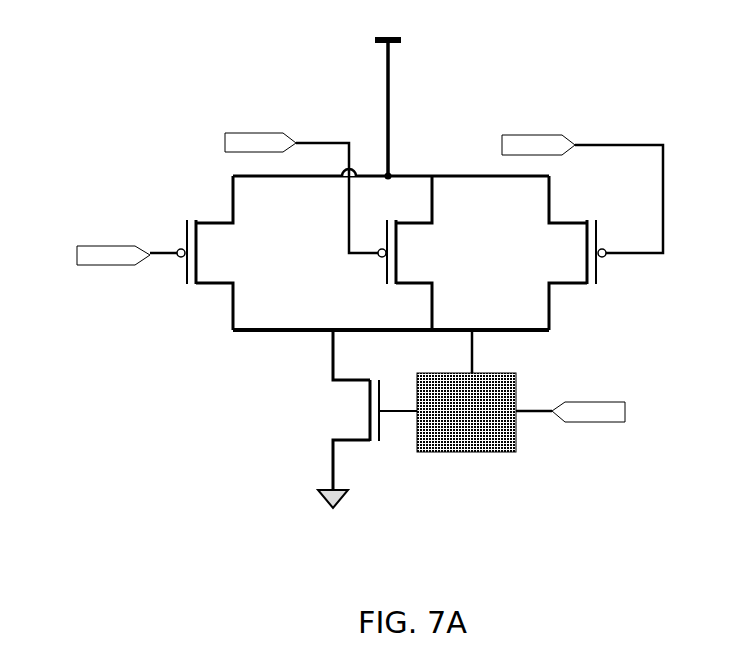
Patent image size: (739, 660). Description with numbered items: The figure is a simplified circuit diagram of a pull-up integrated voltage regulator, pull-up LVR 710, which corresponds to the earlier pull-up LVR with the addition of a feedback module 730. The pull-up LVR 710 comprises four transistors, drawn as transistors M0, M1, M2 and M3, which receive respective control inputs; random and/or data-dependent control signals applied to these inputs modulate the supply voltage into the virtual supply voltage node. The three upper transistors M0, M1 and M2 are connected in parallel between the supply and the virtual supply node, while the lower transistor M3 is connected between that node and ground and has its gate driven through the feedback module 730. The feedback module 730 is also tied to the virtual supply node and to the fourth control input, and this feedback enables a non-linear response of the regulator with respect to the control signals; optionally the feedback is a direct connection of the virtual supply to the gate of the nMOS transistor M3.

The pull-up LVR 710 is at (78, 113).
The feedback module (FBM) 730 is at (454, 452).
The PMOS transistor M0 is at (191, 253).
The PMOS transistor M1 is at (405, 253).
The PMOS transistor M2 is at (577, 253).
The NMOS transistor M3 is at (375, 410).